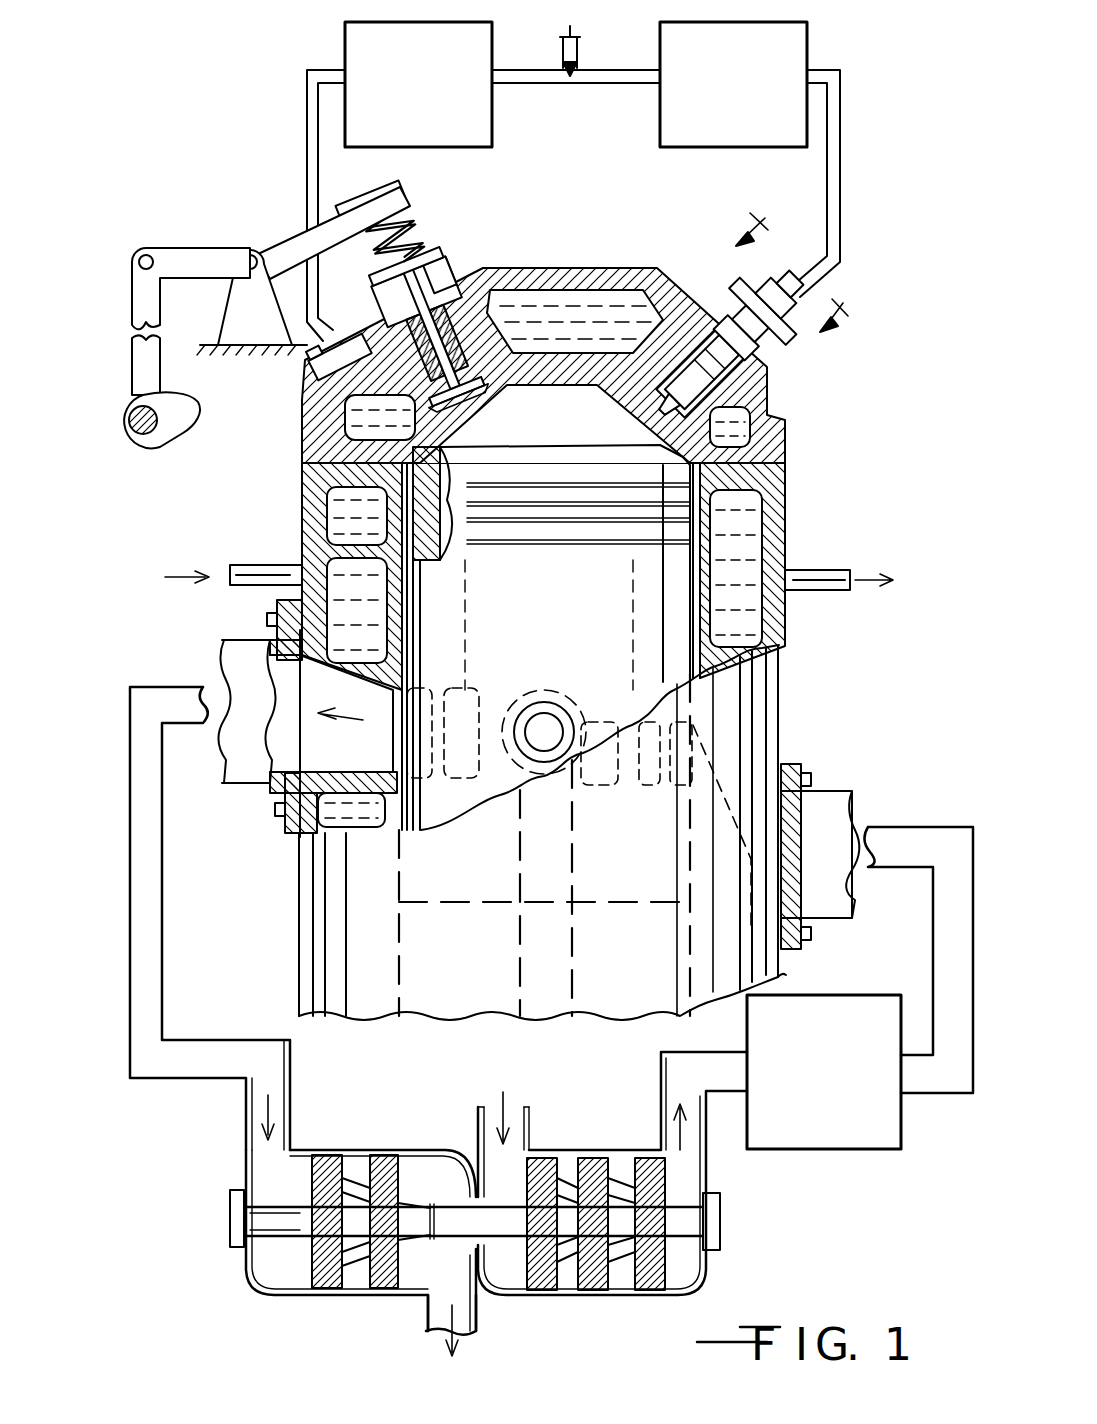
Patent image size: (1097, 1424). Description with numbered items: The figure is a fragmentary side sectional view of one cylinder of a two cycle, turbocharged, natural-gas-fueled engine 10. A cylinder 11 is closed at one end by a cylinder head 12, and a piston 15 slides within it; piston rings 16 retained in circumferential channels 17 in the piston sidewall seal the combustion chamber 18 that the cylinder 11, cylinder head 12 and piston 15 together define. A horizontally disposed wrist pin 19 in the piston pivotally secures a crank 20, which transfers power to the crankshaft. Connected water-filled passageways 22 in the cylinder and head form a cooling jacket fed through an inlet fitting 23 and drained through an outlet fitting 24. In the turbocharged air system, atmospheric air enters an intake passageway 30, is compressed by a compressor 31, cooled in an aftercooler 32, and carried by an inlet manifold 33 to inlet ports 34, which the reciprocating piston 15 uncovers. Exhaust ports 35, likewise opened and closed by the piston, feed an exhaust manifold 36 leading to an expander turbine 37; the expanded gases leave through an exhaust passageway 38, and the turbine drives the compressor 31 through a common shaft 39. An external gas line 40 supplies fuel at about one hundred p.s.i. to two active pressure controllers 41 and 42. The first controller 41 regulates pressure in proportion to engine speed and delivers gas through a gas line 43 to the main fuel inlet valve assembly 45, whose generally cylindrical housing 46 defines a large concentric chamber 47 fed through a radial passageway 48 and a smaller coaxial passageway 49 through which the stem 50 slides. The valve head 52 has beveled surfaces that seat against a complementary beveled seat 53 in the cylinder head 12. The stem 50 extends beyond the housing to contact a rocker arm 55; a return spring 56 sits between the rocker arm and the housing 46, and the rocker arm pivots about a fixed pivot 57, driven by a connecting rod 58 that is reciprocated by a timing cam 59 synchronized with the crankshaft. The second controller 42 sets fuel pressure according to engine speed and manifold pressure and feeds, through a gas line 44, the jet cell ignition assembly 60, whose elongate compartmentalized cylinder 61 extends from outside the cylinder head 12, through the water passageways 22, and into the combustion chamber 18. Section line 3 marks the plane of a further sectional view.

The section line 3- 3 is at (781, 286).
The engine 10 is at (882, 392).
The cylinder 11 is at (790, 480).
The cylinder head 12 is at (598, 266).
The piston 15 is at (551, 637).
The piston rings 16 is at (565, 503).
The circumferential channels 17 is at (420, 492).
The combustion chamber 18 is at (588, 423).
The wrist pin 19 is at (566, 698).
The crank 20 is at (581, 876).
The passageways 22 is at (562, 288).
The inlet fitting 23 is at (242, 566).
The outlet fitting 24 is at (834, 592).
The intake passageway 30 is at (515, 1128).
The compressor 31 is at (583, 1313).
The aftercooler 32 is at (826, 1150).
The inlet passageway or manifold 33 is at (930, 902).
The inlet ports 34 is at (695, 724).
The exhaust ports 35 is at (467, 655).
The exhaust manifold 36 is at (165, 927).
The expander turbine 37 is at (475, 1251).
The exhaust passageway 38 is at (478, 1318).
The common shaft 39 is at (437, 1198).
The gas line 40 is at (580, 56).
The gas pressure controller 41 is at (496, 118).
The second controller 42 is at (700, 147).
The gas line 43 is at (320, 196).
The gas line 44 is at (846, 117).
The main fuel inlet valve assembly 45 is at (454, 309).
The housing 46 is at (450, 256).
The concentric chamber 47 is at (500, 316).
The radial passageway 48 is at (427, 362).
The coaxial passageway 49 is at (461, 285).
The stem 50 is at (374, 287).
The valve head 52 is at (480, 399).
The beveled seat 53 is at (433, 412).
The rocker arm 55 is at (280, 254).
The return spring 56 is at (412, 232).
The fixed pivot 57 is at (232, 297).
The connecting rod 58 is at (137, 294).
The timing cam 59 is at (182, 430).
The jet cell ignition assembly 60 is at (753, 332).
The elongate cylinder 61 is at (772, 372).